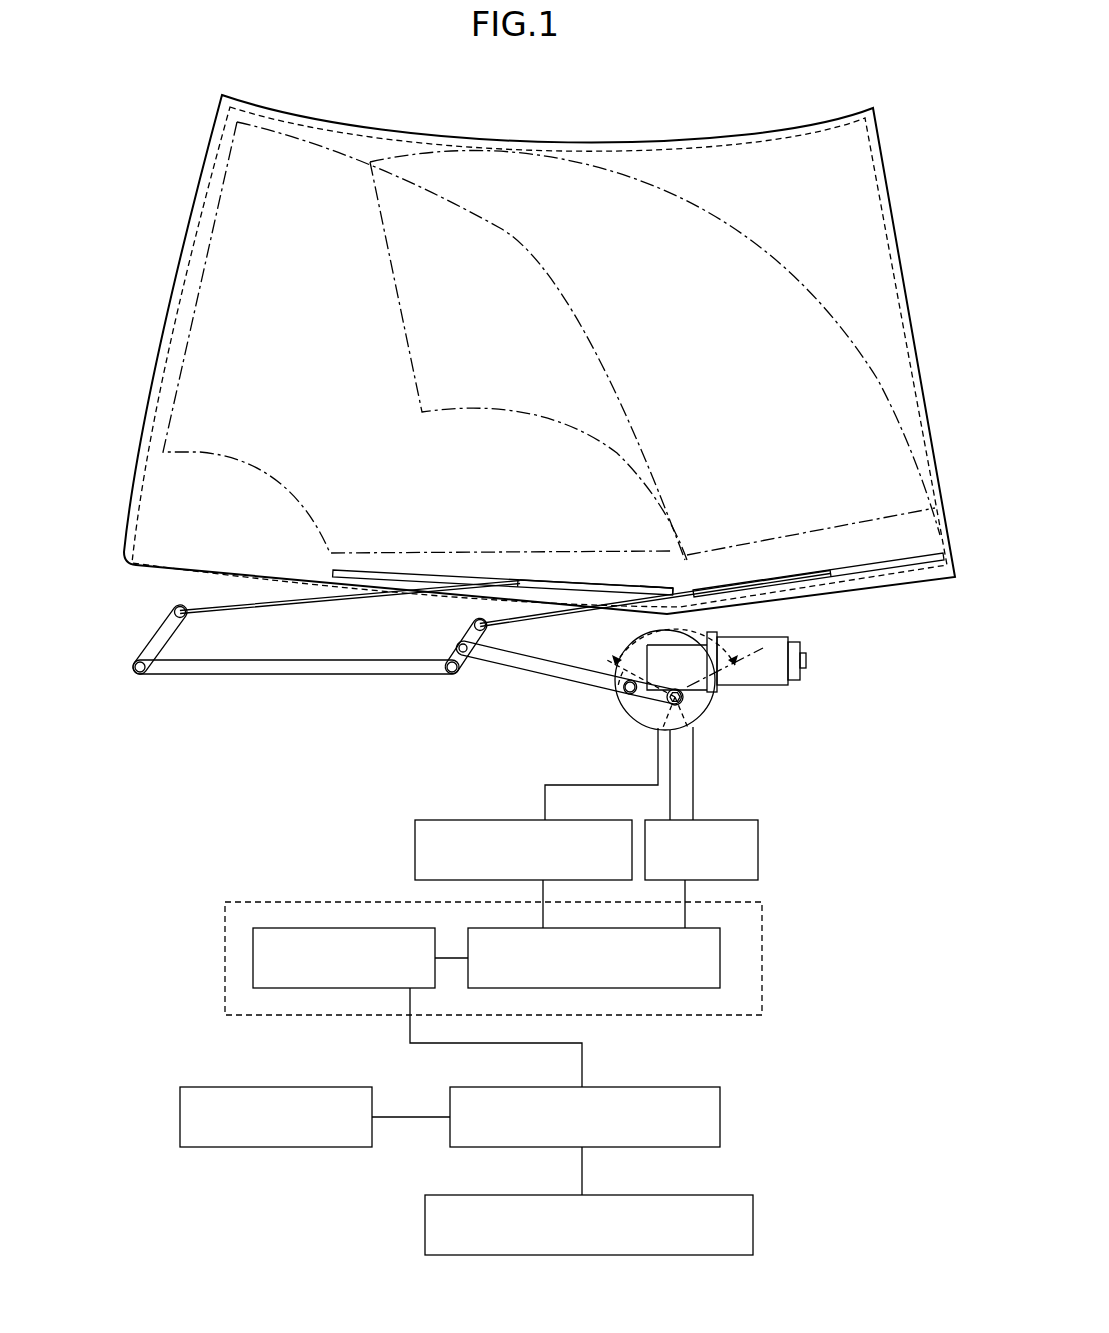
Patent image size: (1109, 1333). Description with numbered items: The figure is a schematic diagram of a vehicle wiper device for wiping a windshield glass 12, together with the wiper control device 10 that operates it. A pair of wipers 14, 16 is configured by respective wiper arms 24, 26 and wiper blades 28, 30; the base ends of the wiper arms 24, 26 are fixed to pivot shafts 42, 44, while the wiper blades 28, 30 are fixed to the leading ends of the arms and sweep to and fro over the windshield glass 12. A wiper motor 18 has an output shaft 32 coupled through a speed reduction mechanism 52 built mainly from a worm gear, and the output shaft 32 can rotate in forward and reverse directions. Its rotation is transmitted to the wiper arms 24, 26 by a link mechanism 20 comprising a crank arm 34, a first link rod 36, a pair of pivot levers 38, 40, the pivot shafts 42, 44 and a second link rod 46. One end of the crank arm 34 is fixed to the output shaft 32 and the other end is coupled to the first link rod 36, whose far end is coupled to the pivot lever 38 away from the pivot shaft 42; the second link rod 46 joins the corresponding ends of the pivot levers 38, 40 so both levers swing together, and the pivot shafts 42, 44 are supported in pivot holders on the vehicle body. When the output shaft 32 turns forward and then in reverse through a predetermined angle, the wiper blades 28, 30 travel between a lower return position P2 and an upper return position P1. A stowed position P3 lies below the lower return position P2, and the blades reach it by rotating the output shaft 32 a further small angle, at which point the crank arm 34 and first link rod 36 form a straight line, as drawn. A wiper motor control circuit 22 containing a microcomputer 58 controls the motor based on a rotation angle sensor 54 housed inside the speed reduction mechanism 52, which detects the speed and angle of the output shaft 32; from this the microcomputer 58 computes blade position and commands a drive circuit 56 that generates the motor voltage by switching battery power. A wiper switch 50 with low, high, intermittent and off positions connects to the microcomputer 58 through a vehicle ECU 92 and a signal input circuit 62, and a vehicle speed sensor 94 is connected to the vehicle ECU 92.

The wiper control device 10 is at (884, 798).
The windshield glass 12 is at (580, 143).
The wiper 14 is at (885, 553).
The wiper 16 is at (601, 578).
The wiper motor 18 is at (806, 660).
The link mechanism 20 is at (384, 678).
The wiper motor control circuit 22 is at (508, 983).
The wiper arm 24 is at (690, 580).
The wiper arm 26 is at (213, 603).
The wiper blade 28 is at (842, 567).
The wiper blade 30 is at (543, 578).
The output shaft 32 is at (713, 722).
The crank arm 34 is at (637, 707).
The first link rod 36 is at (525, 673).
The pivot lever 38 is at (456, 648).
The pivot lever 40 is at (155, 640).
The pivot shaft 42 is at (470, 622).
The pivot shaft 44 is at (174, 610).
The second link rod 46 is at (268, 675).
The wiper switch 50 is at (180, 1117).
The speed reduction mechanism 52 is at (713, 693).
The rotation angle sensor 54 is at (415, 848).
The drive circuit 56 is at (758, 843).
The microcomputer 58 is at (720, 958).
The signal input circuit 62 is at (253, 950).
The vehicle electronic control unit (ECU) 92 is at (720, 1115).
The vehicle speed sensor 94 is at (753, 1223).
The upper return position P1 is at (205, 297).
The lower return position P2 is at (445, 553).
The stowed position P3 is at (347, 572).